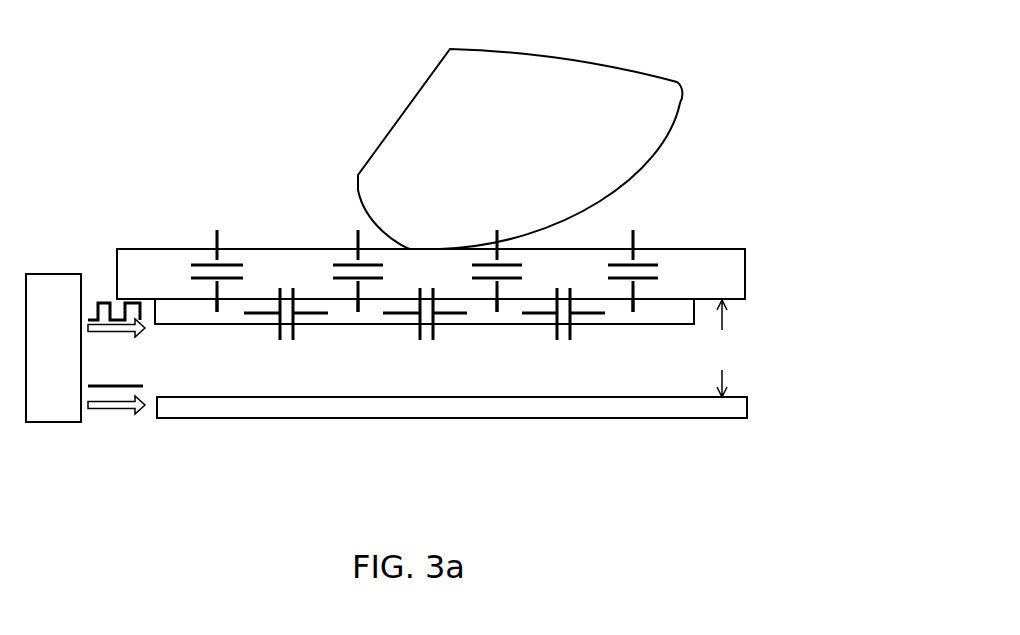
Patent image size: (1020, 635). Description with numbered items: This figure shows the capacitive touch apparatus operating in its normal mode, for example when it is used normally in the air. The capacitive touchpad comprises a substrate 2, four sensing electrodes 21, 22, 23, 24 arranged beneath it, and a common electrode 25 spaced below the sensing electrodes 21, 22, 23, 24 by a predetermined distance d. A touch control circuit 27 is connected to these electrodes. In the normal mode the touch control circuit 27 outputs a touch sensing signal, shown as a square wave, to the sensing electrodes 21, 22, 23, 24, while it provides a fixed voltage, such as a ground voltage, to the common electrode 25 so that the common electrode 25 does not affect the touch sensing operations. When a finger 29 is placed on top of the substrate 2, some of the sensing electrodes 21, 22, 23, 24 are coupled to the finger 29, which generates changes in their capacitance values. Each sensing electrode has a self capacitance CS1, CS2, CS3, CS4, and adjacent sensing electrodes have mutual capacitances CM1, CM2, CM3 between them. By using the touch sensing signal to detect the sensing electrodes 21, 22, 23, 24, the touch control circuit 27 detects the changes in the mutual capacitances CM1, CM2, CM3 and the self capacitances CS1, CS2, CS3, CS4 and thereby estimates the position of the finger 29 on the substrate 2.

The substrate 2 is at (727, 273).
The finger 29 is at (662, 97).
The self capacitance CS1 is at (195, 267).
The self capacitance CS2 is at (335, 267).
The self capacitance CS3 is at (474, 267).
The self capacitance CS4 is at (610, 267).
The mutual capacitance CM1 is at (279, 340).
The mutual capacitance CM2 is at (419, 340).
The mutual capacitance CM3 is at (556, 340).
The sensing electrode 21 is at (217, 312).
The sensing electrode 22 is at (358, 312).
The sensing electrode 23 is at (497, 312).
The sensing electrode 24 is at (633, 312).
The touch control circuit 27 is at (58, 416).
The common electrode 25 is at (540, 407).
The predetermined distance d is at (722, 348).